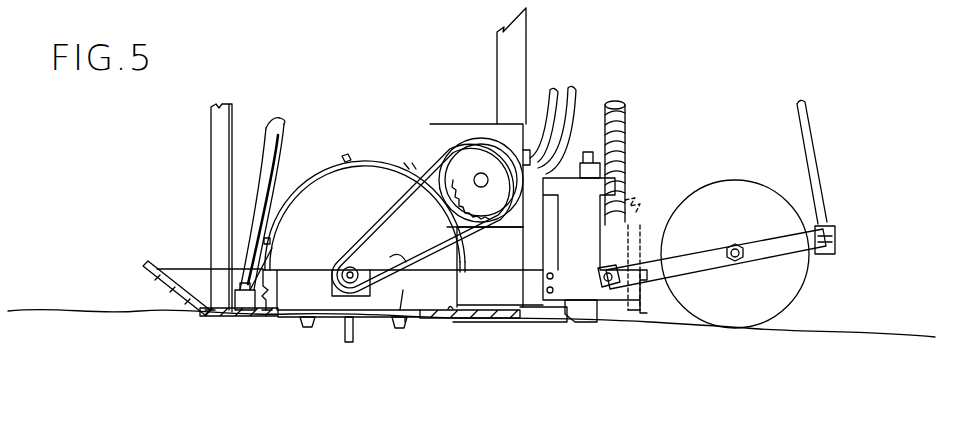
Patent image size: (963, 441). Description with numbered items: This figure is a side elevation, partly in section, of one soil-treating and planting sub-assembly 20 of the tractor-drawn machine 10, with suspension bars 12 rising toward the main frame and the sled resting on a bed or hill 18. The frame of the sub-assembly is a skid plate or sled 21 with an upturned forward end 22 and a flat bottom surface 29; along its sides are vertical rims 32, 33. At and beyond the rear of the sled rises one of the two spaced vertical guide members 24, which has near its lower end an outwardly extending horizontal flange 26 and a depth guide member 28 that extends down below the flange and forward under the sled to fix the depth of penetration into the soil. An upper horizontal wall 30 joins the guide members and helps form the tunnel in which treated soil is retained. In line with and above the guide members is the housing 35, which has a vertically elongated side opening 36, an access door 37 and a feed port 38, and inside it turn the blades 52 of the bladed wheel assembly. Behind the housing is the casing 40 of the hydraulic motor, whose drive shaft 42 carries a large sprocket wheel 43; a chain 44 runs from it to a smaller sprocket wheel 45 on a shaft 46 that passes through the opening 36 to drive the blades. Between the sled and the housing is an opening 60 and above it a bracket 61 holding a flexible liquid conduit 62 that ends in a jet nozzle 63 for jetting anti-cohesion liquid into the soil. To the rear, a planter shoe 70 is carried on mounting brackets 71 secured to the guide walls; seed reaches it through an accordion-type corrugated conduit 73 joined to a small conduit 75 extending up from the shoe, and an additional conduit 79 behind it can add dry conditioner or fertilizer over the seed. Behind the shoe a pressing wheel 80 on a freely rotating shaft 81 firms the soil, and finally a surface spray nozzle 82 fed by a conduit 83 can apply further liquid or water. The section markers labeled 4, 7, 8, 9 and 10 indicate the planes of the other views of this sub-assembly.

The section line 4- 4 is at (137, 100).
The section line 7- 7 is at (192, 222).
The section line 8- 8 is at (170, 380).
The section line 9- 9 is at (663, 83).
The machine 10 is at (305, 200).
The suspension bar 12 is at (223, 155).
The bed or hill 18 is at (95, 311).
The sub-assembly 20 is at (408, 82).
The frame or sled 21 is at (266, 318).
The upturned forward end 22 is at (172, 286).
The guide member 24 is at (500, 303).
The horizontal flange 26 is at (508, 316).
The depth guide member 28 is at (530, 320).
The flat bottom surface 29 is at (448, 314).
The upper horizontal wall 30 is at (469, 258).
The vertical rim 32 is at (186, 272).
The vertical rim 33 is at (407, 318).
The housing 35 is at (381, 194).
The side opening 36 is at (342, 242).
The access door 37 is at (296, 185).
The feed port 38 is at (412, 164).
The casing 40 is at (488, 122).
The drive shaft 42 is at (477, 178).
The large sprocket wheel 43 is at (472, 152).
The chain 44 is at (418, 196).
The smaller sprocket wheel 45 is at (402, 310).
The shaft 46 is at (372, 260).
The blade 52 is at (300, 326).
The opening 60 is at (241, 312).
The bracket 61 is at (216, 316).
The flexible liquid conduit 62 is at (262, 150).
The jet nozzle 63 is at (273, 248).
The planter shoe 70 is at (583, 330).
The mounting bracket 71 is at (555, 188).
The corrugated conduit 73 is at (624, 132).
The small conduit 75 is at (632, 192).
The additional conduit 79 is at (655, 228).
The pressing wheel 80 is at (748, 211).
The shaft 81 is at (712, 261).
The surface spray nozzle 82 is at (830, 255).
The conduit 83 is at (800, 128).